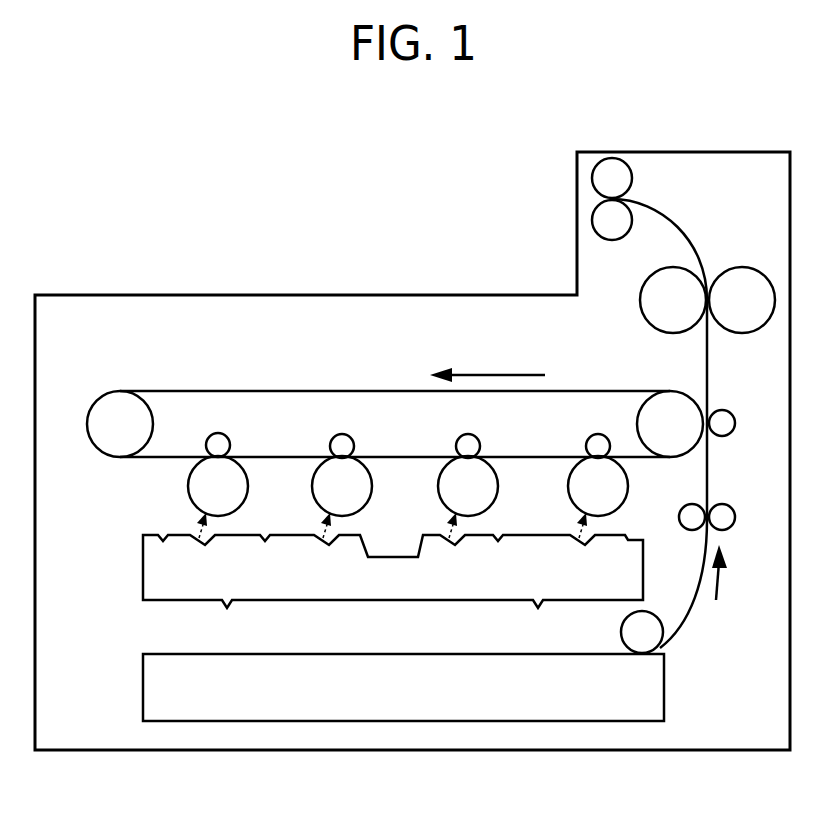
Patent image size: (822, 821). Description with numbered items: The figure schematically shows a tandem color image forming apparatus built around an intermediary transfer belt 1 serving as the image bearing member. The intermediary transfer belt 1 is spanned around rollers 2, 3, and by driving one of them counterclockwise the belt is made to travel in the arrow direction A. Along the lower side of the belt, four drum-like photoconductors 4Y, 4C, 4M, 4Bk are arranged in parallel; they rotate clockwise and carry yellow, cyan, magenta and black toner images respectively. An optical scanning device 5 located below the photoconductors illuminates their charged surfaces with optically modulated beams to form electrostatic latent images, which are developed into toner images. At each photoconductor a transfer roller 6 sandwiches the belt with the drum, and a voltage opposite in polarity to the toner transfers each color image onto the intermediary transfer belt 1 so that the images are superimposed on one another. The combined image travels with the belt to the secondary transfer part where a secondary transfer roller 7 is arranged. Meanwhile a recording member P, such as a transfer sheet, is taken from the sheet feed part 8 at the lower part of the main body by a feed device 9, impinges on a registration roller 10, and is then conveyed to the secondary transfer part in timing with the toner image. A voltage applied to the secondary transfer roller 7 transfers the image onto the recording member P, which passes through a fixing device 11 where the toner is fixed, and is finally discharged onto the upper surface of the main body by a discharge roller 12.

The intermediary transfer belt 1 is at (351, 391).
The roller 2 is at (118, 403).
The roller 3 is at (652, 406).
The photoconductor 4Y is at (198, 486).
The photoconductor 4C is at (326, 474).
The photoconductor 4M is at (452, 474).
The photoconductor 4Bk is at (582, 474).
The optical scanning device 5 is at (145, 578).
The transfer roller 6 is at (218, 433).
The secondary transfer roller 7 is at (726, 419).
The sheet feed part 8 is at (298, 727).
The feed device 9 is at (629, 633).
The registration roller 10 is at (726, 513).
The fixing device 11 is at (740, 280).
The discharge roller 12 is at (612, 168).
The arrow direction A is at (487, 364).
The recording member P is at (276, 666).